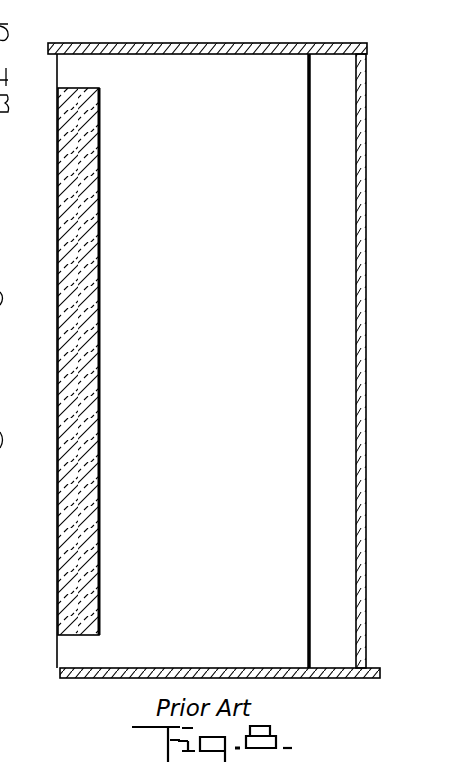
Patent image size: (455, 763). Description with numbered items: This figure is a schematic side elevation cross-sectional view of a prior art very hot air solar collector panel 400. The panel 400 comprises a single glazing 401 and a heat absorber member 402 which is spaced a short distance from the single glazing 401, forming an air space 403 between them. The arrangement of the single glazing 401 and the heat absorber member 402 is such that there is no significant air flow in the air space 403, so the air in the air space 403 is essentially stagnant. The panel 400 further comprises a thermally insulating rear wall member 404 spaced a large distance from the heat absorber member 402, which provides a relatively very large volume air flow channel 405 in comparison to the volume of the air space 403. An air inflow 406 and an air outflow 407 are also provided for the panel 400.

The prior art solar collector panel 400 is at (360, 36).
The single glazing 401 is at (360, 310).
The heat absorber member 402 is at (308, 226).
The air space 403 is at (336, 389).
The thermally insulating rear wall member 404 is at (60, 203).
The air flow channel 405 is at (286, 512).
The air inflow 406 is at (80, 652).
The air outflow 407 is at (60, 62).